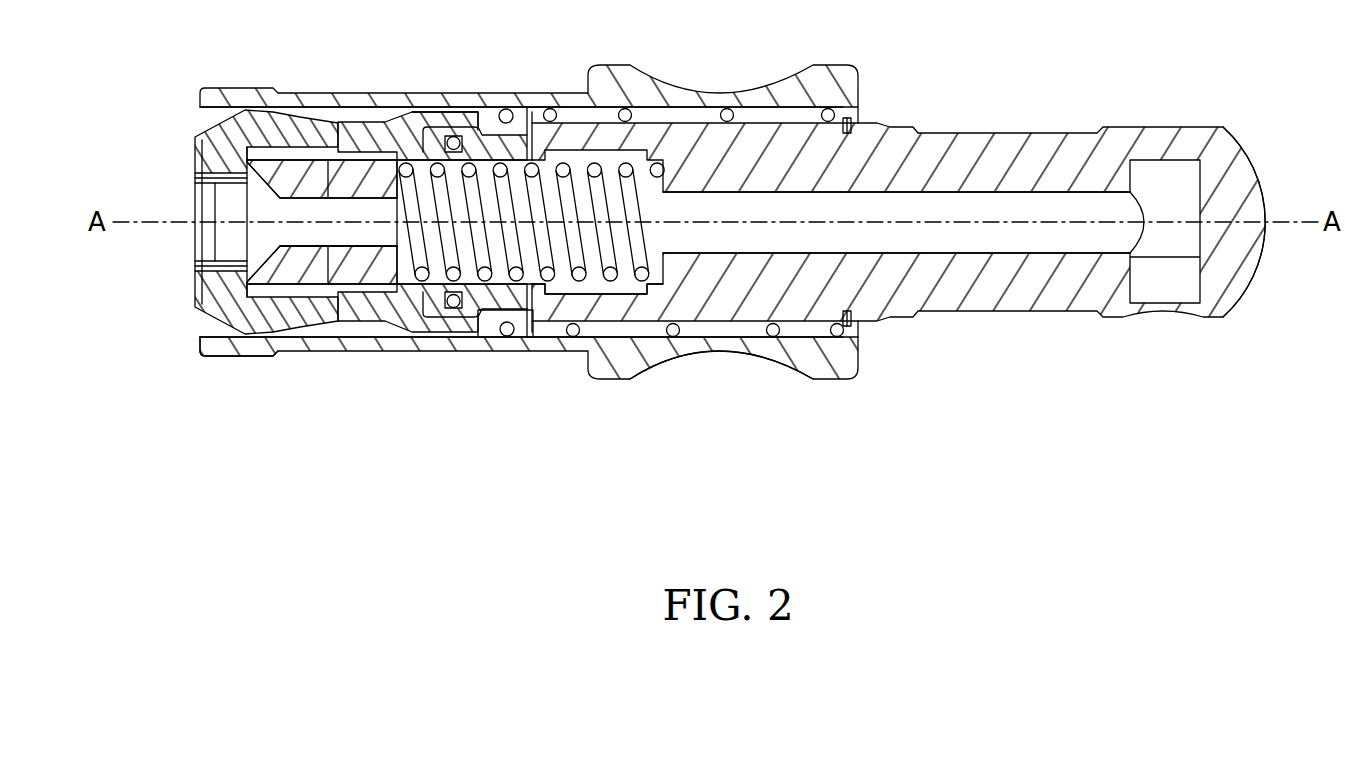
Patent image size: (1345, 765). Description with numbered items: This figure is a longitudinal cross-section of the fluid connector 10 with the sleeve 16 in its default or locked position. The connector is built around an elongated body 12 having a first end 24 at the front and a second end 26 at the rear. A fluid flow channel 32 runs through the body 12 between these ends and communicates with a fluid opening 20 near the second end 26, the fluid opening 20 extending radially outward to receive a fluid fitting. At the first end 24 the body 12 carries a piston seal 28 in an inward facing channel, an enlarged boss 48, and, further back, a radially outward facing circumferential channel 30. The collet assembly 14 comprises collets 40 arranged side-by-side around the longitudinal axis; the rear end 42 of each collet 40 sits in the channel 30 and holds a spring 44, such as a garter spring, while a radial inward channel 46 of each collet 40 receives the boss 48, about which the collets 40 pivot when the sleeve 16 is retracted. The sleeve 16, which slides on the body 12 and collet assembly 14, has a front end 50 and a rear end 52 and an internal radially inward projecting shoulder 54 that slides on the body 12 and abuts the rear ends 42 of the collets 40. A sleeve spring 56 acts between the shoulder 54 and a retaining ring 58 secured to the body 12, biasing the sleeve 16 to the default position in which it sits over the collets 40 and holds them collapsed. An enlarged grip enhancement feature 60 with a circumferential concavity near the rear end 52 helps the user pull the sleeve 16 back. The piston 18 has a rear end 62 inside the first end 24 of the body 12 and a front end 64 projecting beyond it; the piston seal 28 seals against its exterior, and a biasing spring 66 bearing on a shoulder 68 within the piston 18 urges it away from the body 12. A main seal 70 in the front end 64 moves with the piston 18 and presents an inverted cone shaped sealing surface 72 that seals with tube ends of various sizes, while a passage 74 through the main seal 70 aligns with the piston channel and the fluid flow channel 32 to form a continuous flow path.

The fluid connector 10 is at (728, 69).
The body 12 is at (1011, 117).
The collet assembly 14 is at (231, 228).
The sleeve 16 is at (447, 226).
The piston 18 is at (349, 171).
The fluid opening 20 is at (1163, 305).
The first end 24 is at (469, 124).
The second end 26 is at (1220, 130).
The piston seal 28 is at (453, 308).
The circumferential channel 30 is at (500, 158).
The fluid flow channel 32 is at (858, 228).
The collet 40 is at (224, 128).
The rear end 42 is at (488, 322).
The spring 44 is at (508, 337).
The radial inward channel 46 is at (432, 124).
The enlarged boss 48 is at (432, 312).
The front end 50 is at (206, 357).
The rear end 52 is at (838, 72).
The shoulder 54 is at (536, 331).
The sleeve spring 56 is at (628, 106).
The retaining ring 58 is at (852, 118).
The grip enhancement feature 60 is at (788, 364).
The rear end 62 is at (551, 108).
The front end 64 is at (293, 294).
The biasing spring 66 is at (611, 282).
The shoulder 68 is at (380, 288).
The main seal 70 is at (284, 174).
The sealing surface 72 is at (263, 260).
The passage 74 is at (287, 210).